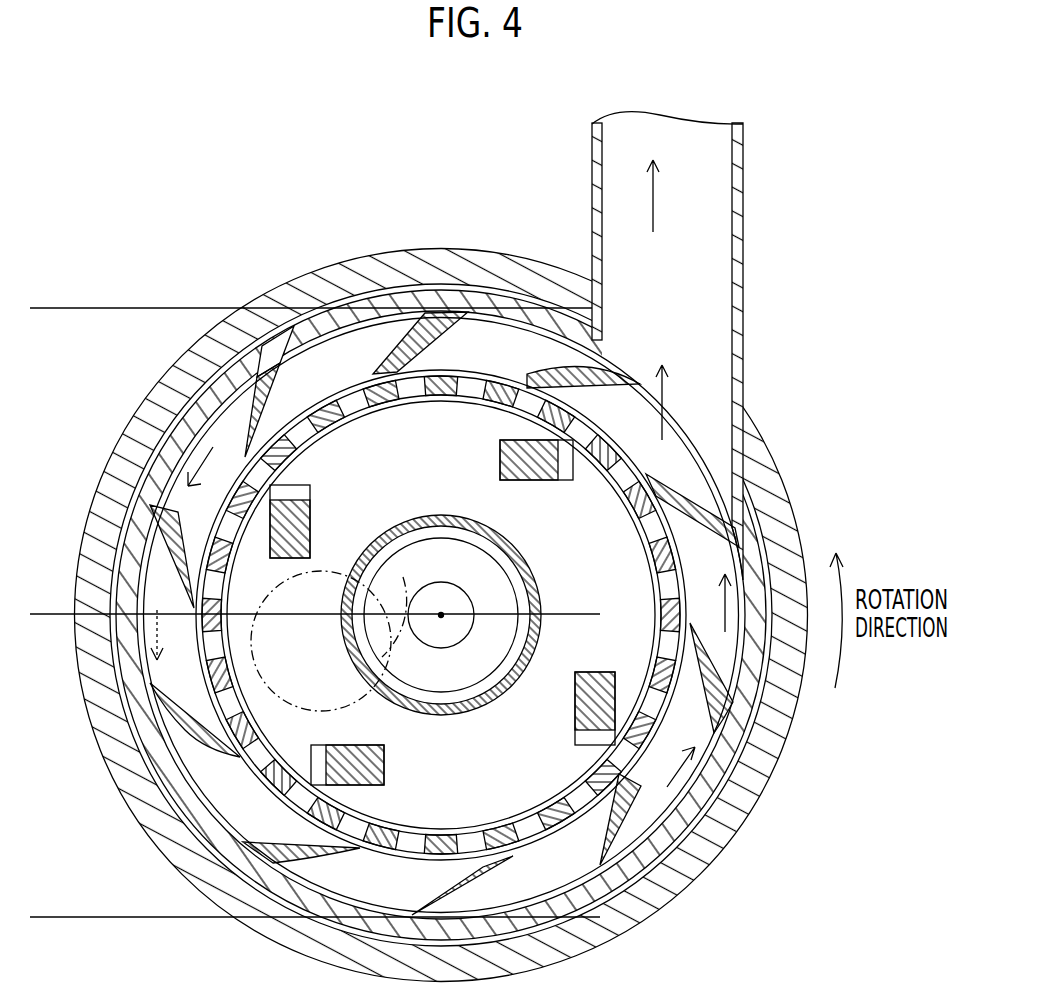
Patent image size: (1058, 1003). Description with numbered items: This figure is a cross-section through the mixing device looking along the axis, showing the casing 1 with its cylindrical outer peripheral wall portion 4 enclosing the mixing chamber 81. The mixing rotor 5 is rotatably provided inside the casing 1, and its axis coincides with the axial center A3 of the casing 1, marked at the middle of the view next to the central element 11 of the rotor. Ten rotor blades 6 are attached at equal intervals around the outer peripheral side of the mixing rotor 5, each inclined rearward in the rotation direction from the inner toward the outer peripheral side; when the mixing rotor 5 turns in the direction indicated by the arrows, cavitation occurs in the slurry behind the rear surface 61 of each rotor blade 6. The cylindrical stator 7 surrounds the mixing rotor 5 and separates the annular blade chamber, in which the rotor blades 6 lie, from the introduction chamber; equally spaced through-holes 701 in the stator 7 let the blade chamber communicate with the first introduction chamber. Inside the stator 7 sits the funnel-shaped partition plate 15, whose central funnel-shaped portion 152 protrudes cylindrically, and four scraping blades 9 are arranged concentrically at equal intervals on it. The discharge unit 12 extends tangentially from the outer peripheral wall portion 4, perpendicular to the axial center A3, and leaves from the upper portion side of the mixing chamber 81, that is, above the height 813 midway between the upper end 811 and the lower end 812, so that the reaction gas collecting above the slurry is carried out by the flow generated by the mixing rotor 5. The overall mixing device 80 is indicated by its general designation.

The casing 1 is at (254, 288).
The outer peripheral wall portion 4 is at (158, 808).
The mixing rotor 5 is at (519, 602).
The rotor blade 6 is at (430, 348).
The stator 7 is at (414, 520).
The scraping blade 9 is at (500, 458).
The shaft 11 is at (437, 598).
The discharge unit 12 is at (702, 263).
The partition plate 15 is at (407, 832).
The rear surface 61 is at (600, 387).
The pump 80 is at (201, 142).
The mixing chamber 81 is at (443, 696).
The funnel-shaped portion 152 is at (405, 683).
The through-hole 701 is at (345, 395).
The upper end 811 is at (311, 268).
The lower end 812 is at (315, 878).
The height 813 is at (315, 574).
The axial center A3 is at (442, 614).